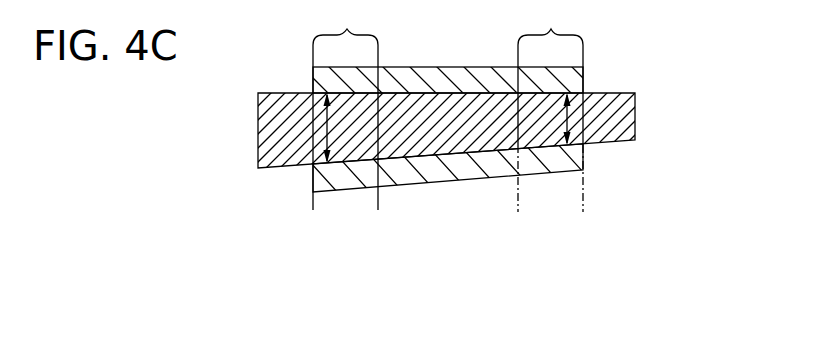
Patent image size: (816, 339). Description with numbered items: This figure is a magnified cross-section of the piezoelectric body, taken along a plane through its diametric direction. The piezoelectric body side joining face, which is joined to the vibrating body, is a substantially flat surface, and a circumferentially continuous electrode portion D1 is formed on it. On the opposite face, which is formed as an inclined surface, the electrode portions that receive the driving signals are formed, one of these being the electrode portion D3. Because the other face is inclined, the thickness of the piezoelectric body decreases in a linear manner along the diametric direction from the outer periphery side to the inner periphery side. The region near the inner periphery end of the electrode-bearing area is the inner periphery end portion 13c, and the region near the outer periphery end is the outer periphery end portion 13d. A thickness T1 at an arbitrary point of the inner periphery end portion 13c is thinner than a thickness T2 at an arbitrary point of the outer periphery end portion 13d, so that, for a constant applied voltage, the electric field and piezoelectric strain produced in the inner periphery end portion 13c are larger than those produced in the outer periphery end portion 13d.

The outer periphery end portion 13d is at (345, 107).
The inner periphery end portion 13c is at (550, 108).
The electrode portion D1 is at (458, 84).
The electrode portion D3 is at (460, 171).
The thickness T2 is at (316, 122).
The thickness T1 is at (583, 117).